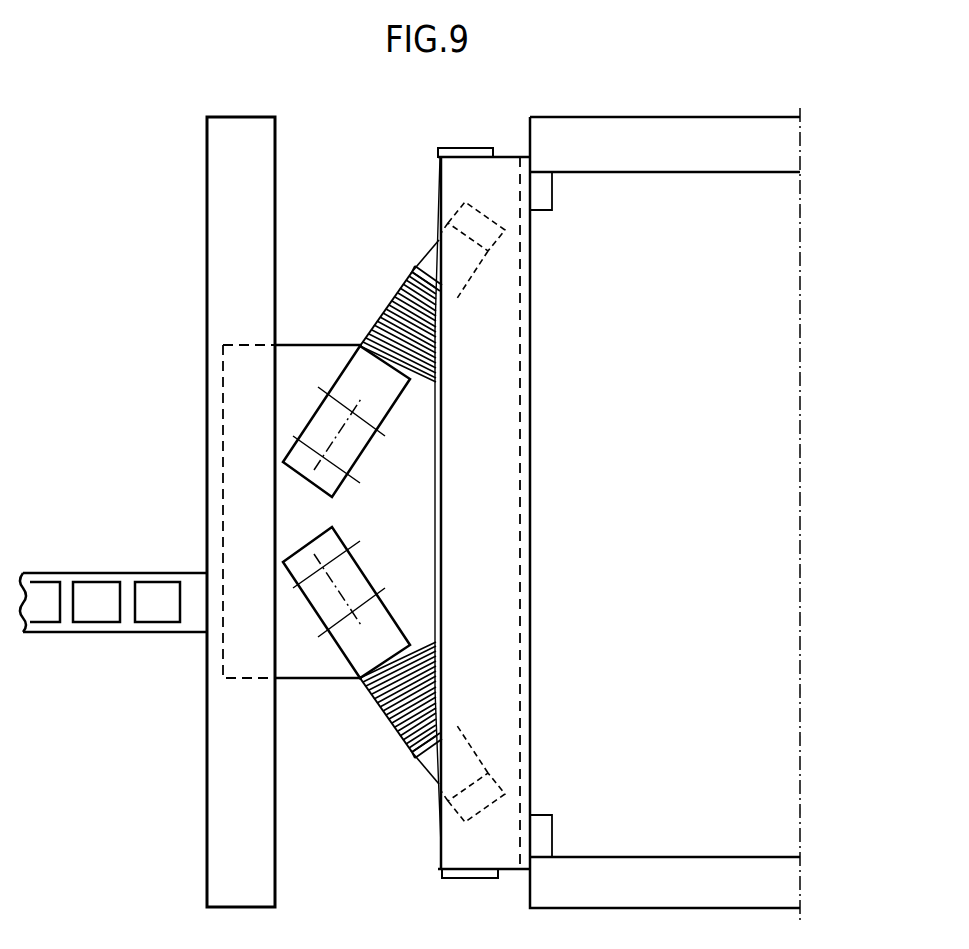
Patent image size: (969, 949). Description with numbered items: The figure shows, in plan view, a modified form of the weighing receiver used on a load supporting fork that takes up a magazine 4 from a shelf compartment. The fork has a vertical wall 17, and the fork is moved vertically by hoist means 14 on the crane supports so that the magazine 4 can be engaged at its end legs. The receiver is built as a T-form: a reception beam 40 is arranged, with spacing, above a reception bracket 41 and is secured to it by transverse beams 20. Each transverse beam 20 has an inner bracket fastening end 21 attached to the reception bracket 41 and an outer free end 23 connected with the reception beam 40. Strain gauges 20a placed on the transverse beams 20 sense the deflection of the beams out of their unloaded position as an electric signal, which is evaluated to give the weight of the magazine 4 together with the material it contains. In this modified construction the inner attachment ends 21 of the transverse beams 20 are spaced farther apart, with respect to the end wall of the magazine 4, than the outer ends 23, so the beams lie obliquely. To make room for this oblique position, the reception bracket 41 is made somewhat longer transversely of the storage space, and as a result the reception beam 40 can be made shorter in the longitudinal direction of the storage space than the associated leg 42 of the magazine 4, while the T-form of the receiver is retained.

The magazine 4 is at (639, 185).
The hoist means 14 is at (97, 592).
The vertical wall 17 is at (262, 851).
The transverse beam 20 is at (424, 258).
The strain gauge 20a is at (382, 310).
The bracket fastening end 21 is at (330, 412).
The free end 23 is at (458, 214).
The reception beam 40 is at (478, 148).
The reception bracket 41 is at (408, 546).
The leg 42 is at (497, 441).